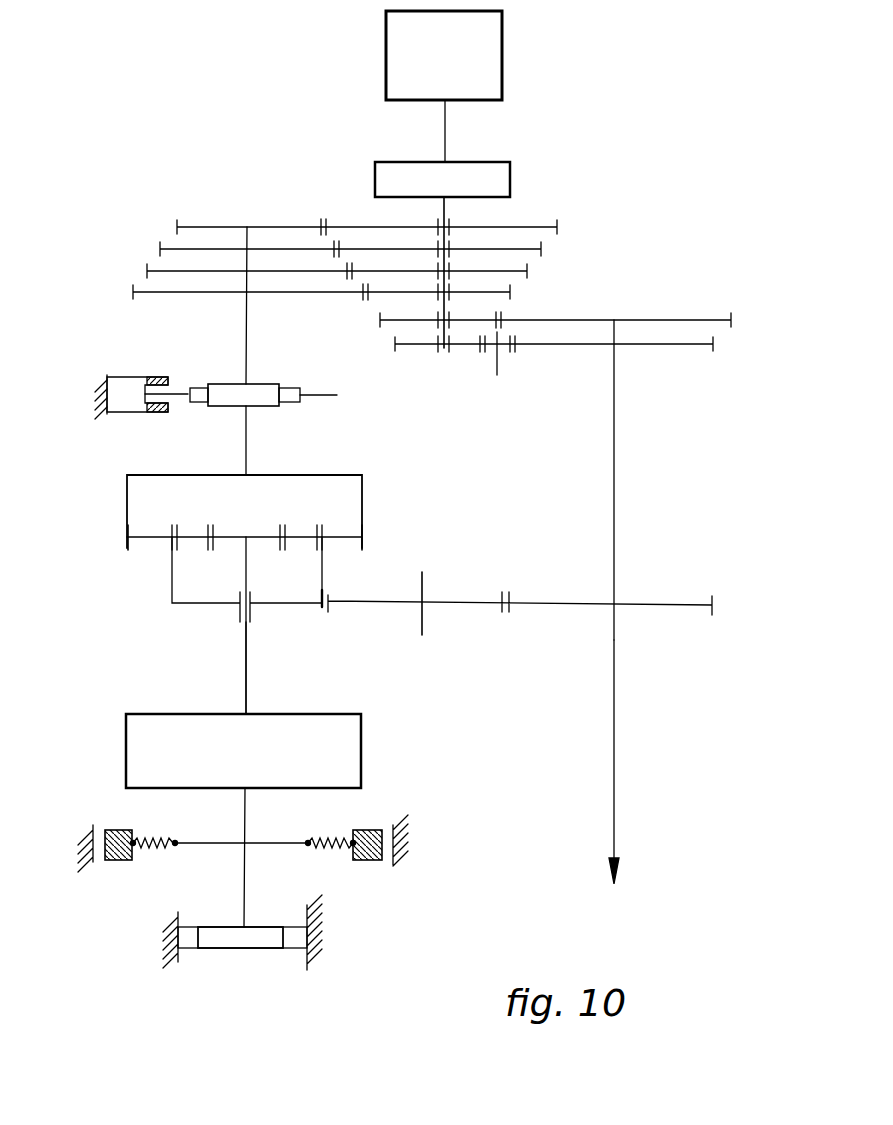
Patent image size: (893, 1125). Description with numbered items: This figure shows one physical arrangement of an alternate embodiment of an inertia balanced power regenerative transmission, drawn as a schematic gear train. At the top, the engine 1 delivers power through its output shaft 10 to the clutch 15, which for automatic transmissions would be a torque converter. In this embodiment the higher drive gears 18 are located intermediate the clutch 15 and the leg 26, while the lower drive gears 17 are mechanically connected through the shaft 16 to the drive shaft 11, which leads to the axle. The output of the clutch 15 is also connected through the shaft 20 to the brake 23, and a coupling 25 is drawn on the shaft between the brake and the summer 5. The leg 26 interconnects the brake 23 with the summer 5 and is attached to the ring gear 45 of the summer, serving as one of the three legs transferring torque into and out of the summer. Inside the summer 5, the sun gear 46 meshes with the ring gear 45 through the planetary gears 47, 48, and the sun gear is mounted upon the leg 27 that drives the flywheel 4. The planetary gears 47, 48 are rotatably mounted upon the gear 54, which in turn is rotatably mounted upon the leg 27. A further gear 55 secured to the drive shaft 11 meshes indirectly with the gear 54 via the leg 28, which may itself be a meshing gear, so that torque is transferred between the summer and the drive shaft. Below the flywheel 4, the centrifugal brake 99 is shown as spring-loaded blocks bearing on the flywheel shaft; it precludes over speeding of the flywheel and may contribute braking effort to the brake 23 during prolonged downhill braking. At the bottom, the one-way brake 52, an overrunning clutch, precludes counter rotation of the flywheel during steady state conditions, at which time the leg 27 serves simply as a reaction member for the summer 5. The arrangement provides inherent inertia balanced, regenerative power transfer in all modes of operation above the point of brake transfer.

The engine 1 is at (502, 52).
The output shaft 10 is at (447, 140).
The clutch 15 is at (510, 184).
The higher drive gears 18 is at (117, 197).
The lower drive gears 17 is at (753, 297).
The shaft 16 is at (614, 497).
The drive shaft 11 is at (614, 743).
The shaft 20 is at (246, 330).
The brake 23 is at (107, 378).
The coupling 25 is at (292, 386).
The leg 26 is at (246, 450).
The summer 5 is at (247, 557).
The ring gear 45 is at (362, 505).
The sun gear 46 is at (230, 536).
The planetary gear 47 is at (298, 536).
The planetary gear 48 is at (150, 532).
The gear 54 is at (237, 593).
The gear 55 is at (665, 604).
The leg 28 is at (418, 610).
The leg 27 is at (246, 660).
The flywheel 4 is at (126, 745).
The centrifugal brake 99 is at (118, 862).
The one-way brake 52 is at (190, 950).